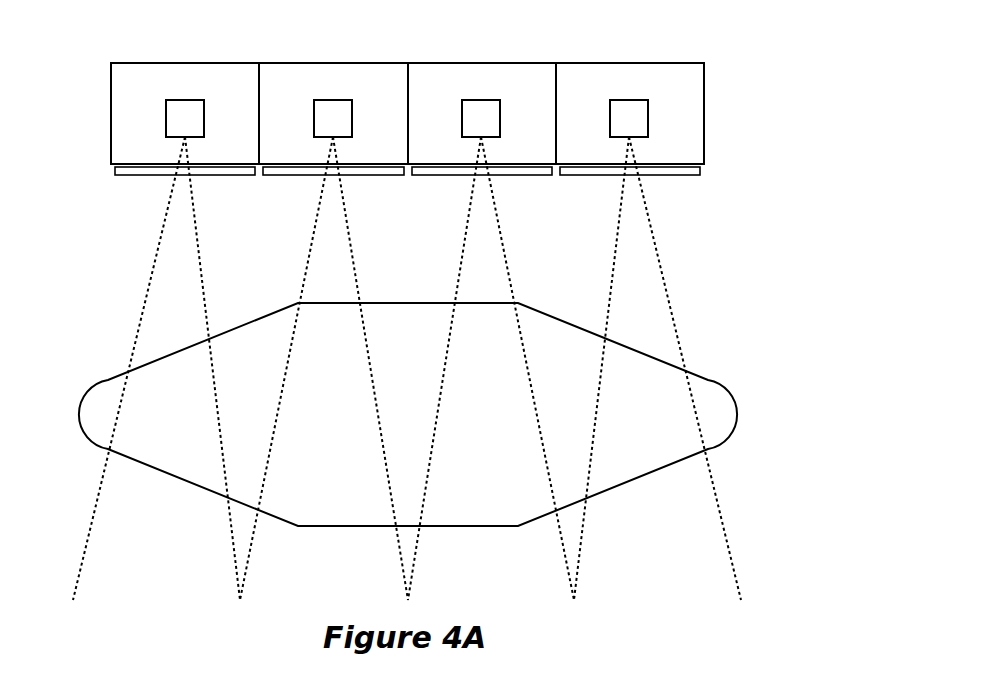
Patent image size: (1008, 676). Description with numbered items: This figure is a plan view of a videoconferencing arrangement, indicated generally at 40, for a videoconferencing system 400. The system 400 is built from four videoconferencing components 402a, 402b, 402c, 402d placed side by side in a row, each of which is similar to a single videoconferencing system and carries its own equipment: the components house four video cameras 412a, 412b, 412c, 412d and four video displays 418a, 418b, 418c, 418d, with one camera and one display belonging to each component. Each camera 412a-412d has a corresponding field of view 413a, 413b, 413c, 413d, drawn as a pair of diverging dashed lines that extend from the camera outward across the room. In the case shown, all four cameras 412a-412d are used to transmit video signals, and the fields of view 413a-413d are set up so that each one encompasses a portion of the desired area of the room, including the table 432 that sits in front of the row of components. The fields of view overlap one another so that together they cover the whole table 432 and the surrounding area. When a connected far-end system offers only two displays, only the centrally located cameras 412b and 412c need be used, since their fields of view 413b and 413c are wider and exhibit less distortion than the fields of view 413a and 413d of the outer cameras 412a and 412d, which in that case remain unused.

The optical system 40 is at (815, 137).
The videoconferencing system 400 is at (102, 63).
The videoconferencing component 402a is at (130, 62).
The videoconferencing component 402b is at (278, 62).
The videoconferencing component 402c is at (427, 62).
The videoconferencing component 402d is at (575, 62).
The video camera 412a is at (170, 100).
The video camera 412b is at (318, 100).
The video camera 412c is at (466, 100).
The video camera 412d is at (614, 100).
The video display 418a is at (142, 175).
The video display 418b is at (291, 175).
The video display 418c is at (440, 175).
The video display 418d is at (588, 175).
The field of view 413a is at (152, 270).
The field of view 413b is at (305, 270).
The field of view 413c is at (460, 270).
The field of view 413d is at (613, 270).
The table 432 is at (408, 414).